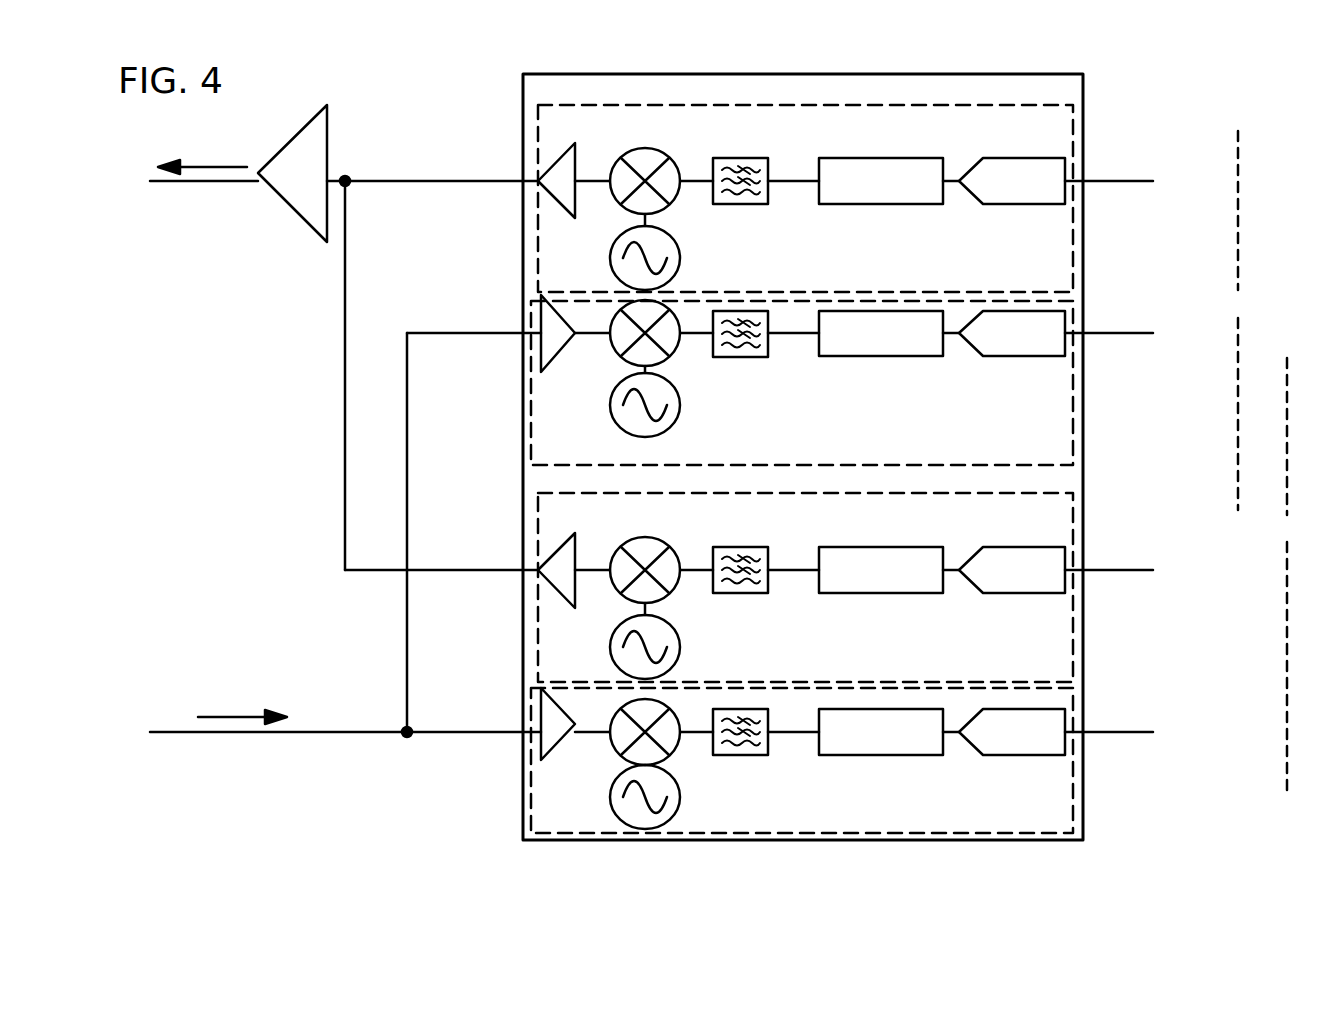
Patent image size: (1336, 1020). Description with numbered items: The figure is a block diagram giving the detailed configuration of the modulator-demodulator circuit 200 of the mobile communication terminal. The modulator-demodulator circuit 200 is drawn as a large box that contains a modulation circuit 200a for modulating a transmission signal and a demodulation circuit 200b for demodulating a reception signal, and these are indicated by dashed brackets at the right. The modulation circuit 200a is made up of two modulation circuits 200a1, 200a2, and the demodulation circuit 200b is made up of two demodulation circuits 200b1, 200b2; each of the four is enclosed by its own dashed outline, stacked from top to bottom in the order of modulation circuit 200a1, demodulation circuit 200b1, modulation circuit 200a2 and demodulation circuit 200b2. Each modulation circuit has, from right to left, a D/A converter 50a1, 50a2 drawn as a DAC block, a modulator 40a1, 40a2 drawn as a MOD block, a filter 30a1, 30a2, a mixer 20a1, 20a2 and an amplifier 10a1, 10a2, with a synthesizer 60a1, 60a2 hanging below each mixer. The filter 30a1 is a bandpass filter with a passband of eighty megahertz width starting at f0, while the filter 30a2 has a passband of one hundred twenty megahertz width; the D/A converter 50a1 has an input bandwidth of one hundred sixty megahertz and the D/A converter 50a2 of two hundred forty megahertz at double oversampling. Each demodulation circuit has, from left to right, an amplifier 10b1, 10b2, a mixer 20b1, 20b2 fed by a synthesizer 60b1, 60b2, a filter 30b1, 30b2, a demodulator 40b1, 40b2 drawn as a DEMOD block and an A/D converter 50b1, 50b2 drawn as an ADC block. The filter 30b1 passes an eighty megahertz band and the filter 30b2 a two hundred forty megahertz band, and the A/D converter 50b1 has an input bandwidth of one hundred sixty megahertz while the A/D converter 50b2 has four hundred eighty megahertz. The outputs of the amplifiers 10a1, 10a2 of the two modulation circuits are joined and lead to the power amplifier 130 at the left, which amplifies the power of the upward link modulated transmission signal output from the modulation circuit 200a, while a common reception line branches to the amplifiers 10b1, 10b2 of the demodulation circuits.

The power amplifier 130 is at (330, 128).
The modulator-demodulator circuit 200 is at (1085, 95).
The modulation circuit 200a is at (1245, 320).
The demodulation circuit 200b is at (1288, 574).
The modulation circuit 200a1 is at (1238, 131).
The demodulation circuit 200b1 is at (1282, 358).
The modulation circuit 200a2 is at (1238, 510).
The demodulation circuit 200b2 is at (1287, 790).
The amplifier 10a1 is at (573, 166).
The mixer 20a1 is at (645, 168).
The filter 30a1 is at (740, 163).
The modulator 40a1 is at (881, 163).
The D/A converter 50a1 is at (1012, 163).
The synthesizer 60a1 is at (671, 252).
The amplifier 10b1 is at (576, 342).
The mixer 20b1 is at (676, 322).
The filter 30b1 is at (746, 352).
The demodulator 40b1 is at (881, 350).
The A/D converter 50b1 is at (1012, 350).
The synthesizer 60b1 is at (674, 410).
The amplifier 10a2 is at (574, 557).
The mixer 20a2 is at (645, 557).
The filter 30a2 is at (740, 552).
The modulator 40a2 is at (881, 552).
The D/A converter 50a2 is at (1012, 552).
The synthesizer 60a2 is at (671, 641).
The amplifier 10b2 is at (572, 739).
The mixer 20b2 is at (675, 716).
The filter 30b2 is at (747, 748).
The demodulator 40b2 is at (881, 744).
The A/D converter 50b2 is at (1012, 744).
The synthesizer 60b2 is at (680, 800).